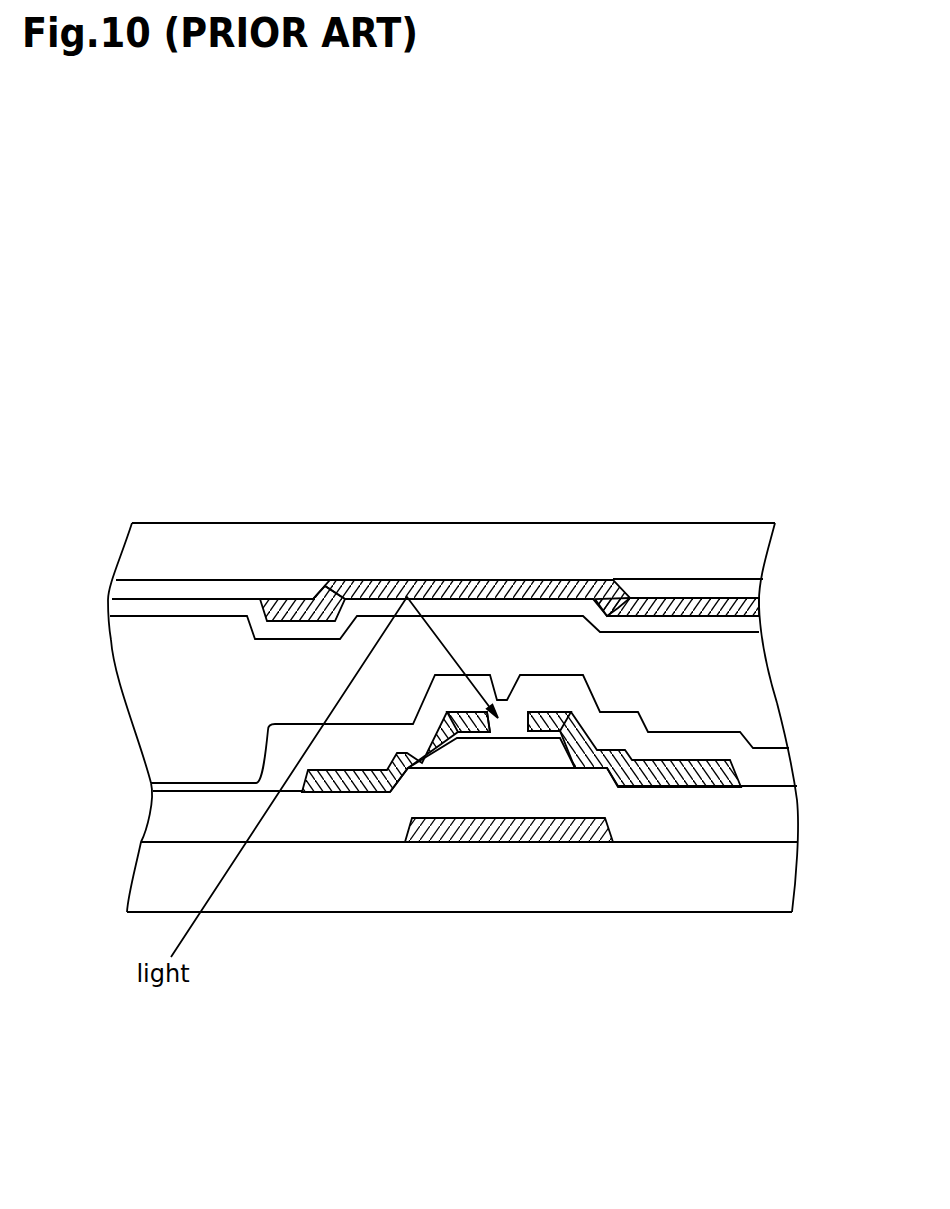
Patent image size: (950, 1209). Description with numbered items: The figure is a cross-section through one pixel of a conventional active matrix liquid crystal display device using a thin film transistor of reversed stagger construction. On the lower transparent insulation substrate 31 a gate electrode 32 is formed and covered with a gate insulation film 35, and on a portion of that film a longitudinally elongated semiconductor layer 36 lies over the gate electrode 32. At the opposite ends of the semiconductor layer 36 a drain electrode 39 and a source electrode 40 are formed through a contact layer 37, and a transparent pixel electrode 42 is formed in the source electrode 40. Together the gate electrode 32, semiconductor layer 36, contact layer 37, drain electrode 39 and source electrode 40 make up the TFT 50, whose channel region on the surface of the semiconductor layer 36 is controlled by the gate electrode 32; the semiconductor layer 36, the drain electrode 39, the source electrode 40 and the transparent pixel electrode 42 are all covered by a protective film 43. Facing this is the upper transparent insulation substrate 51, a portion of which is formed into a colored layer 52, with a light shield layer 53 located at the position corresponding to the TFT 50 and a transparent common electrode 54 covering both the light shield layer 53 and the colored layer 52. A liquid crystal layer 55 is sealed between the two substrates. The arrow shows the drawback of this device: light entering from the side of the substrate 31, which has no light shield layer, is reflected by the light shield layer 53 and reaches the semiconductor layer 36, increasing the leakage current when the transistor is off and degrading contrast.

The transparent insulation substrate 31 is at (646, 882).
The gate electrode 32 is at (508, 833).
The gate insulation film 35 is at (337, 826).
The semiconductor layer 36 is at (513, 756).
The contact layer 37 is at (470, 733).
The drain electrode 39 is at (697, 783).
The source electrode 40 is at (408, 769).
The transparent pixel electrode 42 is at (197, 783).
The protective film 43 is at (722, 737).
The TFT 50 is at (430, 668).
The transparent insulation substrate 51 is at (668, 543).
The colored layer 52 is at (243, 595).
The light shield layer 53 is at (482, 582).
The transparent common electrode 54 is at (167, 607).
The liquid crystal layer 55 is at (752, 665).